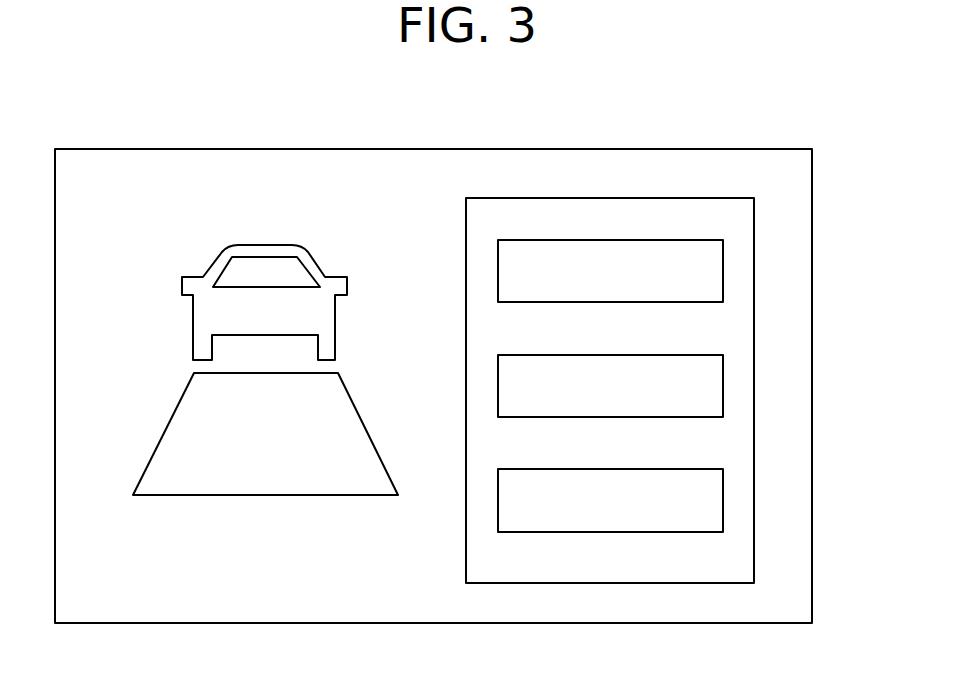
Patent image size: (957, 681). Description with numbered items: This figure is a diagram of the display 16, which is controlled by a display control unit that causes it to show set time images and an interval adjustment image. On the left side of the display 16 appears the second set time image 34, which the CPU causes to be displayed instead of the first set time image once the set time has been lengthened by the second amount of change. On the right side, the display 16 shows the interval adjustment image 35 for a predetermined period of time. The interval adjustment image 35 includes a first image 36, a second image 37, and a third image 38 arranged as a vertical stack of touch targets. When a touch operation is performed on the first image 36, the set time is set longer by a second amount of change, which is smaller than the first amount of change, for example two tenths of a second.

The display 16 is at (325, 149).
The second set time image 34 is at (149, 388).
The interval adjustment image 35 is at (656, 198).
The first image 36 is at (724, 264).
The second image 37 is at (724, 384).
The third image 38 is at (724, 503).